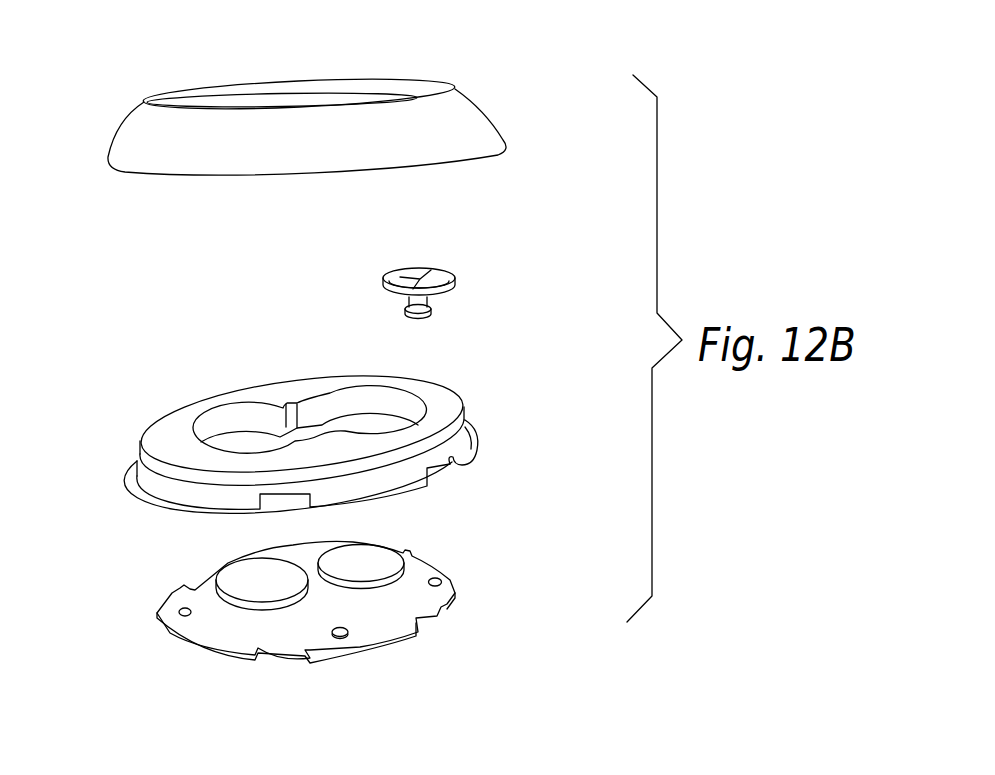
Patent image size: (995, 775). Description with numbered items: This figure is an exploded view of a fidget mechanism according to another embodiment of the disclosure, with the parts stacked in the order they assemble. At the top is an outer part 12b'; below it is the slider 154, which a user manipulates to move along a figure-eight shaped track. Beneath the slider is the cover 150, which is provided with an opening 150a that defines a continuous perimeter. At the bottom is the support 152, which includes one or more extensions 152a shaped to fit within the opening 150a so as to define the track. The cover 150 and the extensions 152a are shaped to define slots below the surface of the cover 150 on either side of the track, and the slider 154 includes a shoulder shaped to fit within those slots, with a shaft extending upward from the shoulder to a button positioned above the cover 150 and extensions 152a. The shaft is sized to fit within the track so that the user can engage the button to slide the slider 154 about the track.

The cap 12b' is at (351, 89).
The slider 154 is at (463, 272).
The cover 150 is at (452, 400).
The opening 150a is at (250, 437).
The support 152 is at (455, 577).
The extensions 152a is at (243, 570).